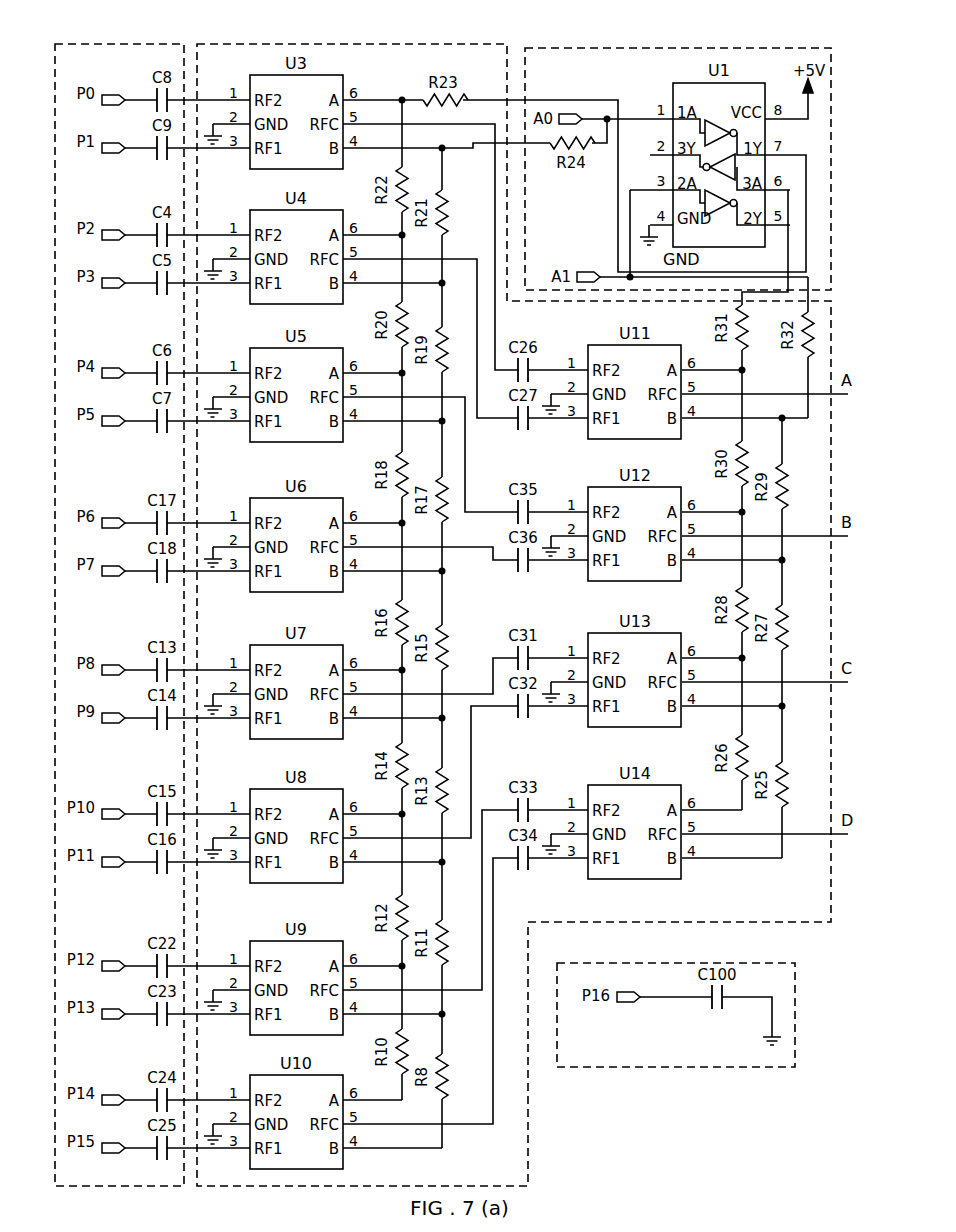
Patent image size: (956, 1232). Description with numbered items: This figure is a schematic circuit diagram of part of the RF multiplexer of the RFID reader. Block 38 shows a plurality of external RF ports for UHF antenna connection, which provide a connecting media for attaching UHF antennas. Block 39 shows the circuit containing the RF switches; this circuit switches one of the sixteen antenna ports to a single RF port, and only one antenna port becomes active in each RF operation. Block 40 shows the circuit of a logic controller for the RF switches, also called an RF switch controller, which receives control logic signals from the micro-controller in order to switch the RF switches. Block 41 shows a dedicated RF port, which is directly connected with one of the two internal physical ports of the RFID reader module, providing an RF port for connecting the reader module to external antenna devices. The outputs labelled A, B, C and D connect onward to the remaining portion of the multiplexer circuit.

The block of external RF ports 38 is at (92, 44).
The RF switch circuit block 39 is at (342, 44).
The logic controller block 40 is at (650, 48).
The dedicated RF port block 41 is at (628, 1068).